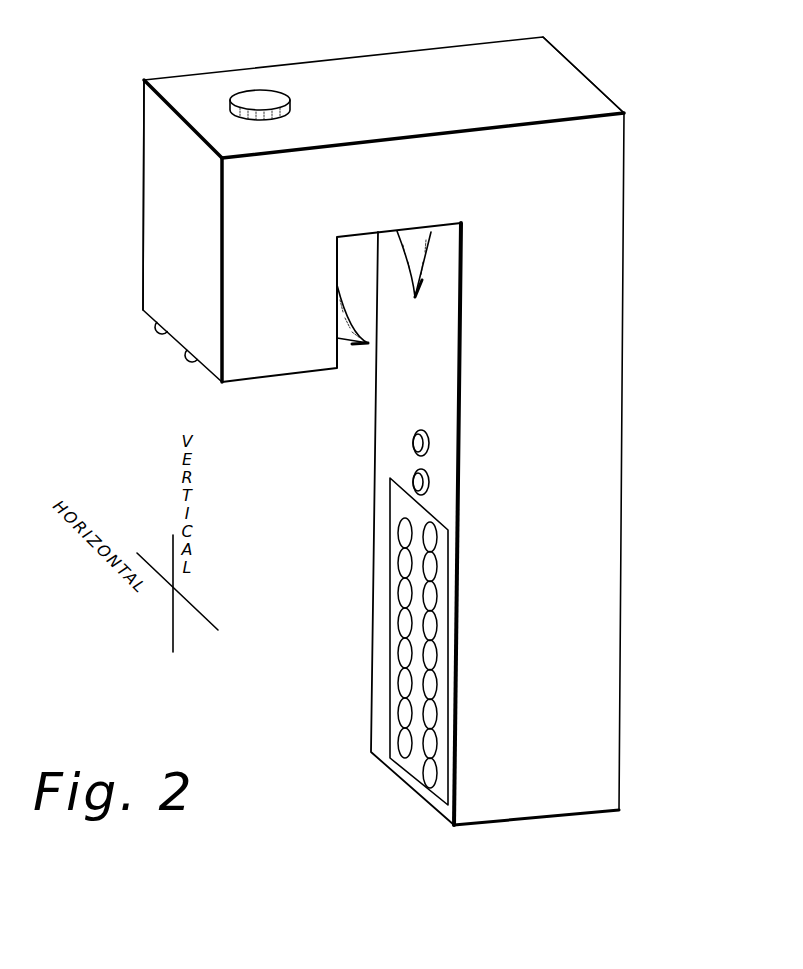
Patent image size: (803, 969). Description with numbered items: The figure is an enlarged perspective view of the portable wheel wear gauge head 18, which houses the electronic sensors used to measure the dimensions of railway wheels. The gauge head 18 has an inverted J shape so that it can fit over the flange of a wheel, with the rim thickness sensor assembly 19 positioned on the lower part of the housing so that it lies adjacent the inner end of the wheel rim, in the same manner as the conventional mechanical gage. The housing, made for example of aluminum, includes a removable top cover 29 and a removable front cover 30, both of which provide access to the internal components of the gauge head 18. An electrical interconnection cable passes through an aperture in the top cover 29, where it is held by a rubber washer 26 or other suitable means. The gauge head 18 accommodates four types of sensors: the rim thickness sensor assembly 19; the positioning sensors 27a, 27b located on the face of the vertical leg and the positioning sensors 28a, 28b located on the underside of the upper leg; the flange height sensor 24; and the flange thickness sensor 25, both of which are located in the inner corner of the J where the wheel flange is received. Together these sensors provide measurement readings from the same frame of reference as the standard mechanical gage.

The gauge head 18 is at (608, 268).
The rim thickness sensor assembly 19 is at (390, 677).
The flange height sensor 24 is at (428, 270).
The flange thickness sensor 25 is at (352, 345).
The rubber washer 26 is at (252, 97).
The positioning sensor 27a is at (412, 443).
The positioning sensor 27b is at (412, 484).
The positioning sensor 28a is at (160, 334).
The positioning sensor 28b is at (190, 368).
The top cover 29 is at (565, 85).
The front cover 30 is at (155, 270).